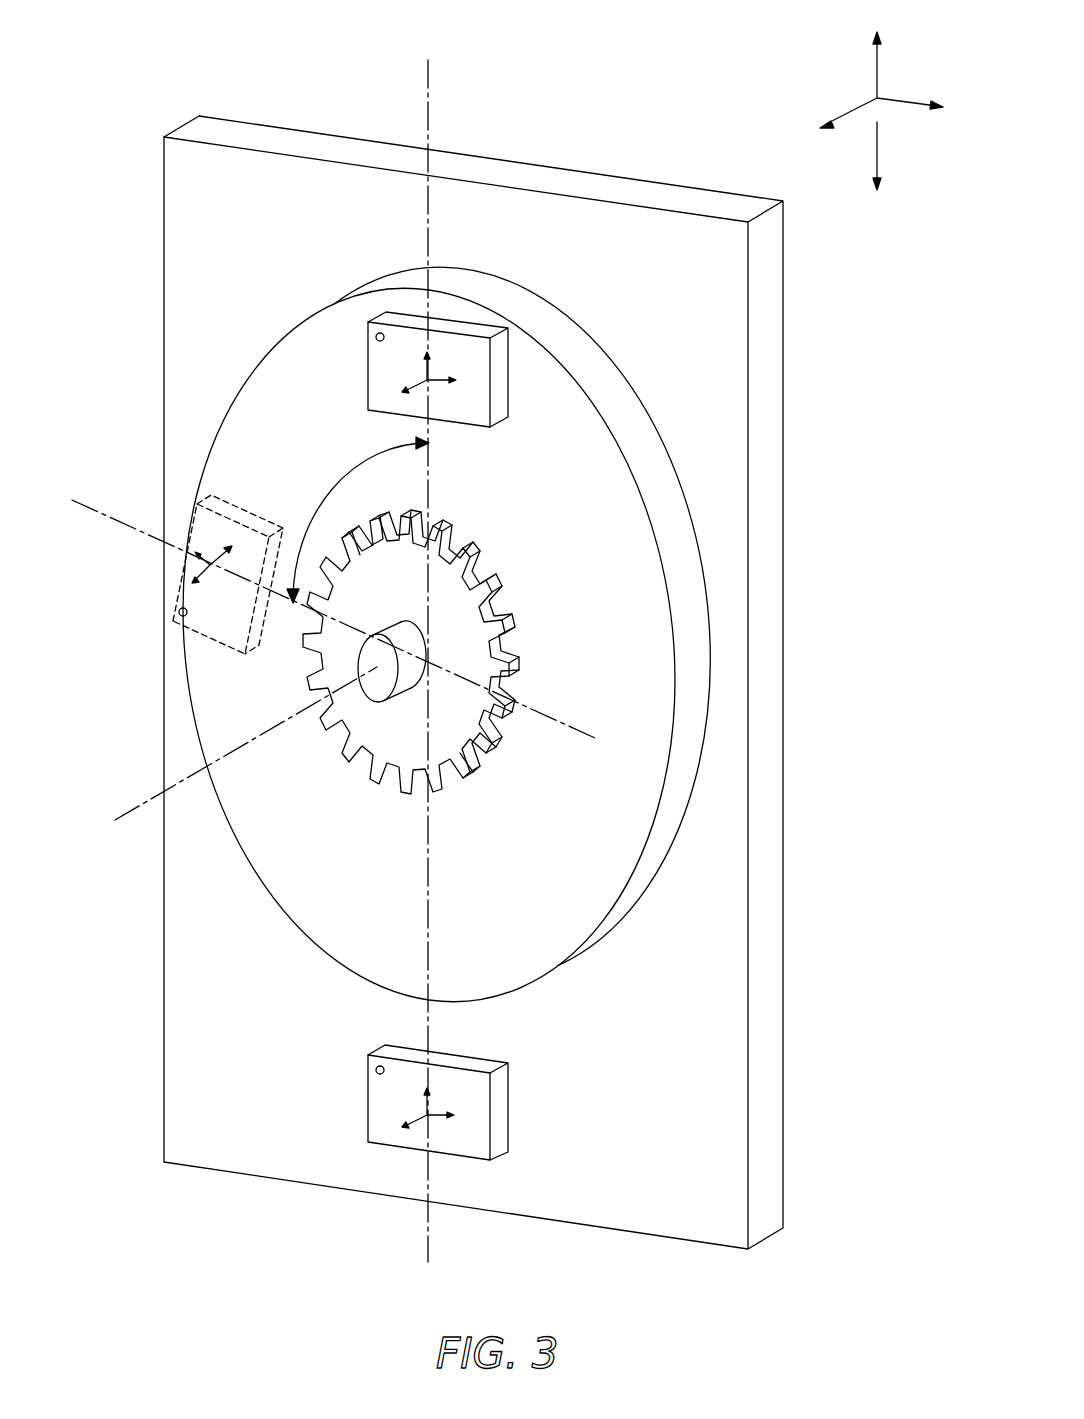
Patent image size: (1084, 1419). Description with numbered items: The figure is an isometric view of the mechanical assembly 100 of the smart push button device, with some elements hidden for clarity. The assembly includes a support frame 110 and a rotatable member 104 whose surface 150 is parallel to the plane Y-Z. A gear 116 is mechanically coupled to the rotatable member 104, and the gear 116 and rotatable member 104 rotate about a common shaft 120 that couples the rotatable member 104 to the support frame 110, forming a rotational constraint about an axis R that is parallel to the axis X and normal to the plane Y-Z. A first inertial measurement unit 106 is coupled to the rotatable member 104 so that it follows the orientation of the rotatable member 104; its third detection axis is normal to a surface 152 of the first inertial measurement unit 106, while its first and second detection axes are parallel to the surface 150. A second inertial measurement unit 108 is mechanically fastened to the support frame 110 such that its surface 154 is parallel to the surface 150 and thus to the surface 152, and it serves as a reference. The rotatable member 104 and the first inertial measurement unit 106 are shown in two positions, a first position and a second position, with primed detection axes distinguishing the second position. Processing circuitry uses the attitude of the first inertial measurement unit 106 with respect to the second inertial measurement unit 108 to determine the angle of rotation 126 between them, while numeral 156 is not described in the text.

The mechanical assembly 100 is at (146, 84).
The rotatable member 104 is at (223, 455).
The first inertial measurement unit 106 is at (459, 352).
The second inertial measurement unit 108 is at (380, 1110).
The support frame 110 is at (200, 275).
The gear 116 is at (367, 727).
The shaft 120 is at (360, 655).
The angle of rotation ϕ 126 is at (313, 520).
The surface of the rotatable member 150 is at (555, 417).
The surface of the first IMU 152 is at (478, 358).
The surface of the second IMU 154 is at (468, 1085).
The plate surface region 156 is at (714, 1011).